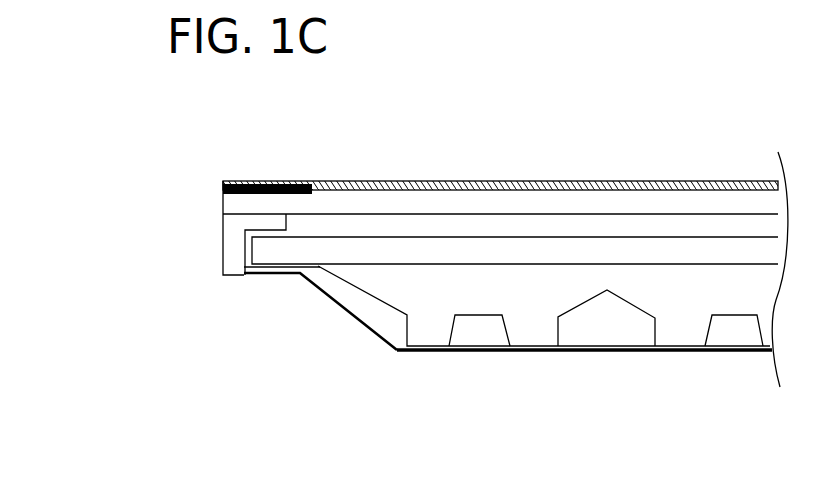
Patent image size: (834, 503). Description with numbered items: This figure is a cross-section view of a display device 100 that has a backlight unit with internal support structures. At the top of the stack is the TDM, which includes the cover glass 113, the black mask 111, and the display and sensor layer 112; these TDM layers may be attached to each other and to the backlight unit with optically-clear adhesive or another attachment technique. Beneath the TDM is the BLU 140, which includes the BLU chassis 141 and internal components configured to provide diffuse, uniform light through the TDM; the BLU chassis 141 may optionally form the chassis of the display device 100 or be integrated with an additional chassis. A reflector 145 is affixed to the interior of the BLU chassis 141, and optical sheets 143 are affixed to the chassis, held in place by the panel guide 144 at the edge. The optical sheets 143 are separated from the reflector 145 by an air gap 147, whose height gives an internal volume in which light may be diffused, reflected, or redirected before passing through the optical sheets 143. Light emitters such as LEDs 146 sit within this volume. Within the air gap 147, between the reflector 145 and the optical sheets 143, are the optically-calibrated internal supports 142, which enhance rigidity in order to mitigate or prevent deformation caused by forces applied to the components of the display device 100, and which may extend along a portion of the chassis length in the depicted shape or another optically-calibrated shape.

The display device 100 is at (124, 120).
The black mask 111 is at (256, 184).
The display and sensor layer 112 is at (746, 201).
The cover glass 113 is at (483, 182).
The backlight unit 140 is at (197, 254).
The BLU chassis 141 is at (528, 353).
The optically-calibrated internal supports 142 is at (562, 318).
The optical sheets 143 is at (673, 247).
The panel guide 144 is at (226, 277).
The reflector 145 is at (405, 315).
The LEDs 146 is at (468, 315).
The air gap 147 is at (603, 282).